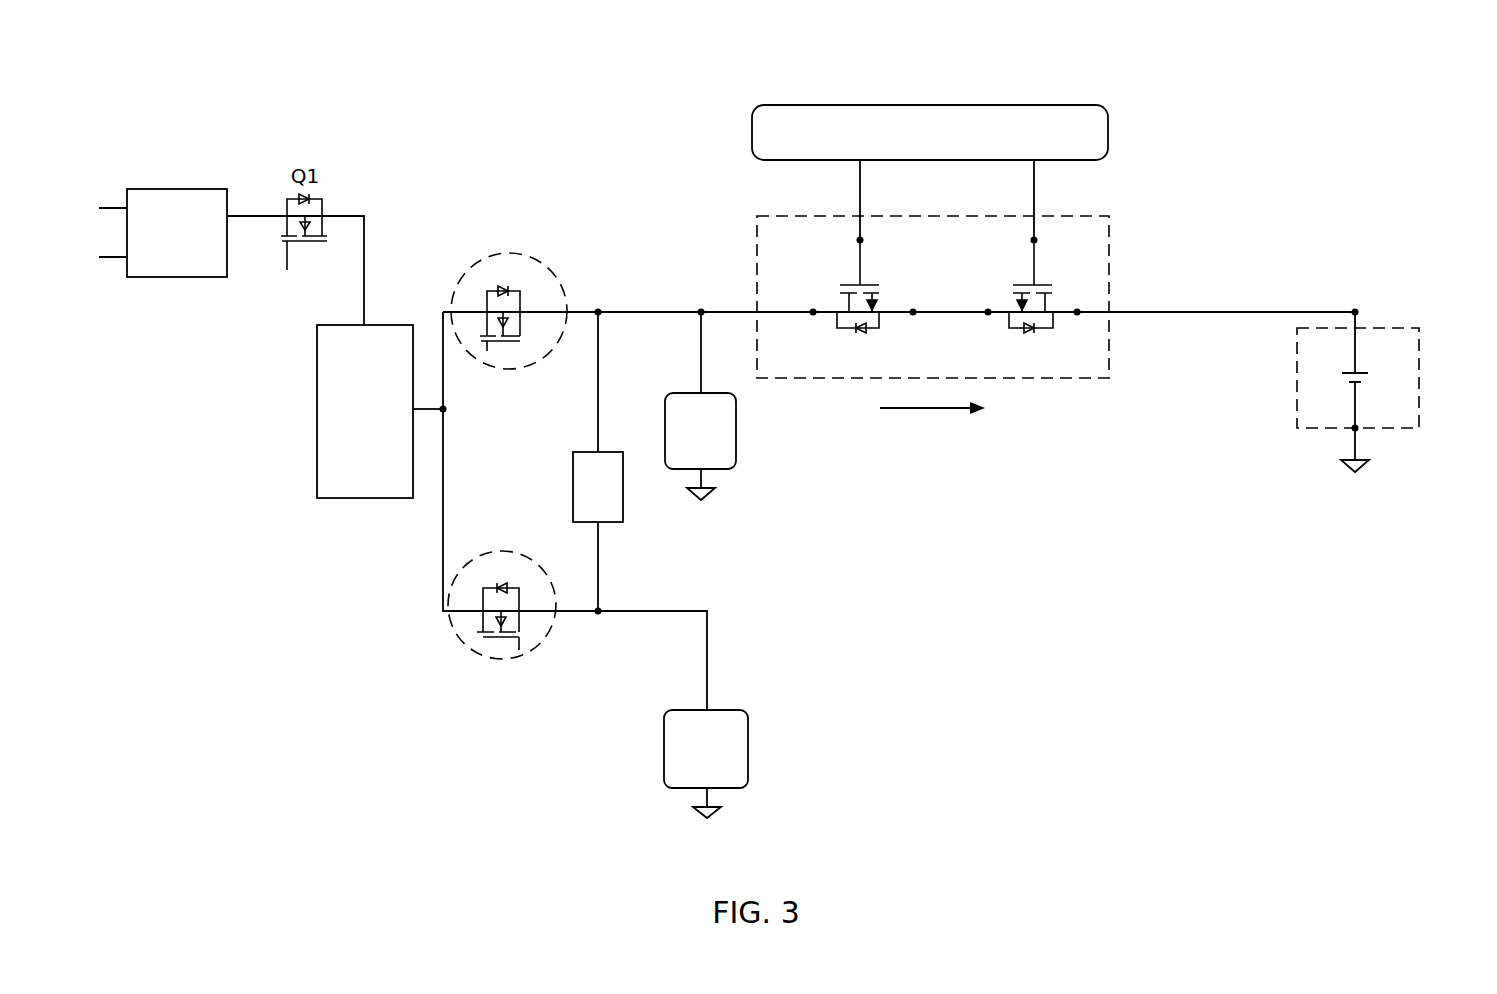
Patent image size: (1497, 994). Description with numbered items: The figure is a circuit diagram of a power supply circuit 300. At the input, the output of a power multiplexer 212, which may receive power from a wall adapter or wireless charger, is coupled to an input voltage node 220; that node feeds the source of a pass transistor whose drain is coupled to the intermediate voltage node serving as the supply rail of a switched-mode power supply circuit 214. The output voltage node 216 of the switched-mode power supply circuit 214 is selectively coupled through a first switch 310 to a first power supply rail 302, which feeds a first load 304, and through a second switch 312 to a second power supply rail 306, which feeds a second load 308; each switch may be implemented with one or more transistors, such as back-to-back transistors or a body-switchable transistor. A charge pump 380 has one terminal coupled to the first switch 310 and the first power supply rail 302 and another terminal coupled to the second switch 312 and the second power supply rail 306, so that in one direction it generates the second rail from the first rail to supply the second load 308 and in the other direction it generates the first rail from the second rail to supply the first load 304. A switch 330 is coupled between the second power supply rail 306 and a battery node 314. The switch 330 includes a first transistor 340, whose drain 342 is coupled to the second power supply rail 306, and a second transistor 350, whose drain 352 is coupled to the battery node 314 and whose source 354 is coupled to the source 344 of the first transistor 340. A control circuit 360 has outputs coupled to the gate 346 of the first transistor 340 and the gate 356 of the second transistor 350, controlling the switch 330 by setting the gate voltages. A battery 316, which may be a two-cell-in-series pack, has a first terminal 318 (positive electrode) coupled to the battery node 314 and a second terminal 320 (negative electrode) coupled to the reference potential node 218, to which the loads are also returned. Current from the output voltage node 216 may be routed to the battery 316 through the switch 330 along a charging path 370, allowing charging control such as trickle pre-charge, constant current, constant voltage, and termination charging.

The power supply circuit 300 is at (204, 52).
The power multiplexer 212 is at (177, 189).
The input voltage node 220 is at (275, 216).
The SMPS circuit 214 is at (317, 406).
The output voltage node 216 is at (447, 415).
The second power supply rail 306 is at (443, 347).
The second switch 312 is at (513, 255).
The second load 308 is at (673, 393).
The charge pump 380 is at (573, 497).
The first power supply rail 302 is at (440, 576).
The first switch 310 is at (462, 645).
The first load 304 is at (664, 737).
The reference potential node 218 is at (712, 503).
The control circuit 360 is at (752, 125).
The switch 330 is at (1028, 378).
The first transistor 340 is at (838, 249).
The drain 342 is at (813, 310).
The source 344 is at (913, 310).
The gate 346 is at (866, 240).
The second transistor 350 is at (1014, 246).
The drain 352 is at (1077, 310).
The source 354 is at (988, 310).
The gate 356 is at (1040, 240).
The charging path 370 is at (915, 410).
The battery node 314 is at (1175, 312).
The first terminal 318 is at (1354, 311).
The battery 316 is at (1419, 428).
The second terminal 320 is at (1353, 426).